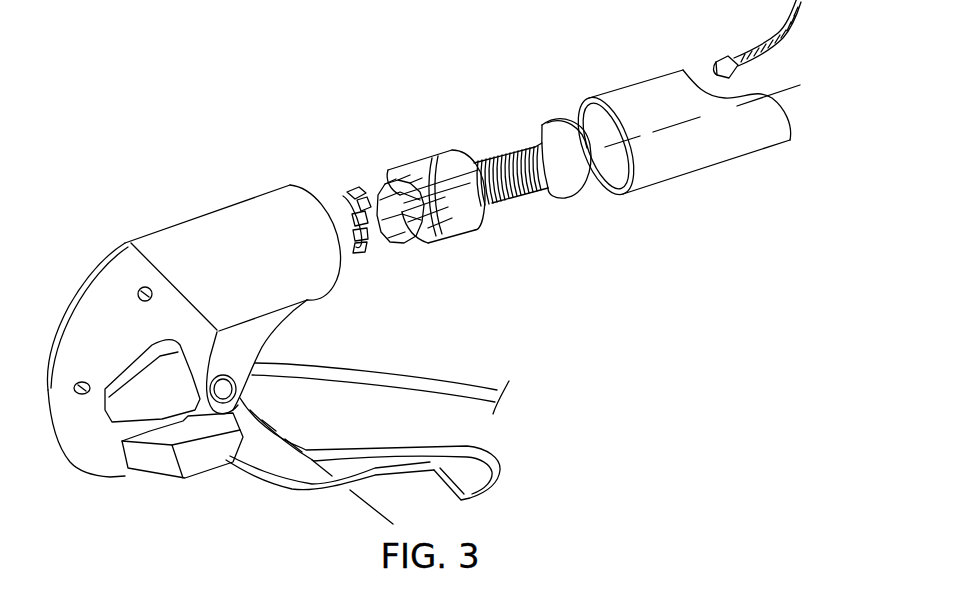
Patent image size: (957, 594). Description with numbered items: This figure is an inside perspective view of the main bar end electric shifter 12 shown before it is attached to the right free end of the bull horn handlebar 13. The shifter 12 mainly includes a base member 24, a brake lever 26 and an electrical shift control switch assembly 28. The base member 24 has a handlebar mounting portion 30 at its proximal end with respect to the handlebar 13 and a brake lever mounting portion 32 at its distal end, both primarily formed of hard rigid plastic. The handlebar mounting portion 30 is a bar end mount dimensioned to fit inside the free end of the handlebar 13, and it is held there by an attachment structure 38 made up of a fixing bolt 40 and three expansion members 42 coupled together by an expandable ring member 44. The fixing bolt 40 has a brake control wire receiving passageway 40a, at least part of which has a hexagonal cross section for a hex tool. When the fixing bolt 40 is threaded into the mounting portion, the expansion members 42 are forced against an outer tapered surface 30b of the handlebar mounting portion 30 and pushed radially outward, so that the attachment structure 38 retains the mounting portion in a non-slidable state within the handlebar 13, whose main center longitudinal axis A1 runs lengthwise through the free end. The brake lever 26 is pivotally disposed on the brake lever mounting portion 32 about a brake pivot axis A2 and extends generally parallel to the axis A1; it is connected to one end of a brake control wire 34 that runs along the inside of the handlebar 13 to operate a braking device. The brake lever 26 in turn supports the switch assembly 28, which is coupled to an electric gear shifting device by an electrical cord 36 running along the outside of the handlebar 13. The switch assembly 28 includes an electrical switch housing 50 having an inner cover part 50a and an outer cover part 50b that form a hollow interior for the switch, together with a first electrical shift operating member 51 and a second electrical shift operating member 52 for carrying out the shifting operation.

The main bar end electric shifter 12 is at (146, 184).
The bull horn handlebar 13 is at (678, 177).
The base member 24 is at (221, 207).
The brake lever 26 is at (284, 490).
The electrical shift control switch assembly 28 is at (127, 357).
The handlebar mounting portion 30 is at (329, 197).
The outer tapered surface 30b is at (378, 250).
The brake lever mounting portion 32 is at (255, 330).
The brake control wire 34 is at (784, 12).
The electrical cord 36 is at (436, 378).
The attachment structure 38 is at (436, 186).
The fixing bolt 40 is at (532, 187).
The brake control wire receiving passageway 40a is at (494, 168).
The expansion members 42 is at (402, 246).
The expandable ring member 44 is at (436, 160).
The electrical switch housing 50 is at (111, 199).
The inner cover part 50a is at (94, 296).
The outer cover part 50b is at (108, 262).
The first electrical shift operating member 51 is at (124, 367).
The second electrical shift operating member 52 is at (162, 479).
The main center longitudinal axis A1 is at (658, 130).
The brake pivot axis A2 is at (380, 505).